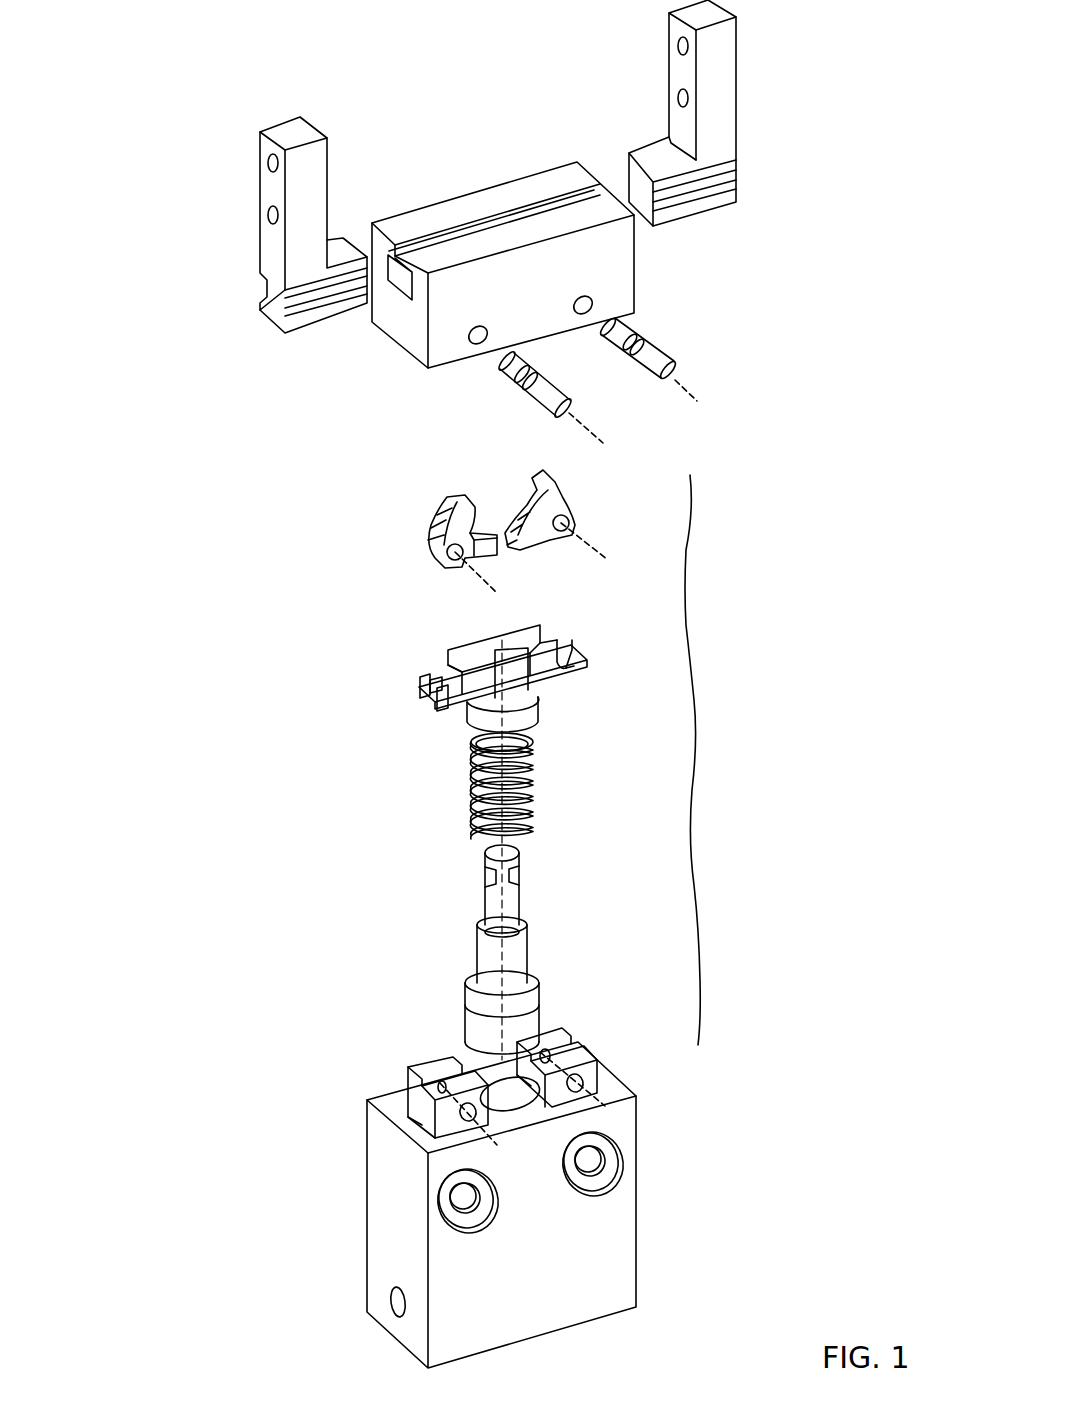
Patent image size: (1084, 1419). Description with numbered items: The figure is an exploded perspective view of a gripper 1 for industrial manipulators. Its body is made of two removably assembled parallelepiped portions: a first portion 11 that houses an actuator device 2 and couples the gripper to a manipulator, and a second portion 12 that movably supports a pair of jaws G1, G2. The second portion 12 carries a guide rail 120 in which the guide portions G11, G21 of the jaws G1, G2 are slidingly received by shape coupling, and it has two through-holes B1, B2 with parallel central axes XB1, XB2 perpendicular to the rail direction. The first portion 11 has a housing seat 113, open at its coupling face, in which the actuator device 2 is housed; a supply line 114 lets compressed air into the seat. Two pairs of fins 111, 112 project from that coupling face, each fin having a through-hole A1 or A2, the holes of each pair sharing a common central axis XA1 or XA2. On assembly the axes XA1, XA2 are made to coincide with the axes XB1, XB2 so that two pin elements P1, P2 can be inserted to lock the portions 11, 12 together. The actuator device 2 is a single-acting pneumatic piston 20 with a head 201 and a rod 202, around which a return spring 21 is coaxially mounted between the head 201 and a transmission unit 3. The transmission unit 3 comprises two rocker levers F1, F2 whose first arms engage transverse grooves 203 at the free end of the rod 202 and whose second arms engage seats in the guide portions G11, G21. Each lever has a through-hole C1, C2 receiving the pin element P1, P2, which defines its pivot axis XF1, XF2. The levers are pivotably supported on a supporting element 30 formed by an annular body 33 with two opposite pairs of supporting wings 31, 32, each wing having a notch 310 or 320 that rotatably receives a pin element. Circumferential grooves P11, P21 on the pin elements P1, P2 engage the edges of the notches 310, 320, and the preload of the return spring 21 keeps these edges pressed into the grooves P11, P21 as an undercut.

The gripper 1 is at (185, 762).
The actuator device 2 is at (700, 886).
The transmission unit 3 is at (698, 594).
The first portion 11 is at (612, 1316).
The second portion 12 is at (447, 198).
The piston 20 is at (478, 947).
The return spring 21 is at (472, 793).
The supporting element 30 is at (538, 719).
The supporting wing 31 is at (437, 708).
The supporting wing 32 is at (585, 670).
The annular body 33 is at (472, 718).
The fins 111 is at (405, 1085).
The fins 112 is at (577, 1042).
The housing seat 113 is at (548, 1105).
The supply line 114 is at (392, 1300).
The guide rail 120 is at (555, 203).
The head 201 is at (528, 1013).
The rod 202 is at (508, 910).
The transverse grooves 203 is at (490, 873).
The notch 310 is at (440, 683).
The notch 320 is at (565, 641).
The through-hole A1 is at (458, 1085).
The through-hole A2 is at (564, 1052).
The through-hole B1 is at (479, 345).
The through-hole B2 is at (592, 306).
The through-hole C1 is at (447, 550).
The through-hole C2 is at (570, 525).
The rocker lever F1 is at (442, 531).
The rocker lever F2 is at (567, 504).
The jaw G1 is at (258, 247).
The jaw G2 is at (738, 126).
The guide portion G11 is at (310, 318).
The guide portion G21 is at (675, 205).
The pin element P1 is at (561, 391).
The pin element P2 is at (670, 366).
The circumferential grooves P11 is at (518, 378).
The circumferential grooves P21 is at (636, 340).
The central axis XA1 is at (413, 1066).
The central axis XA2 is at (610, 1108).
The central axis XB1 is at (603, 443).
The central axis XB2 is at (697, 401).
The pivot axis XF1 is at (497, 593).
The pivot axis XF2 is at (615, 554).